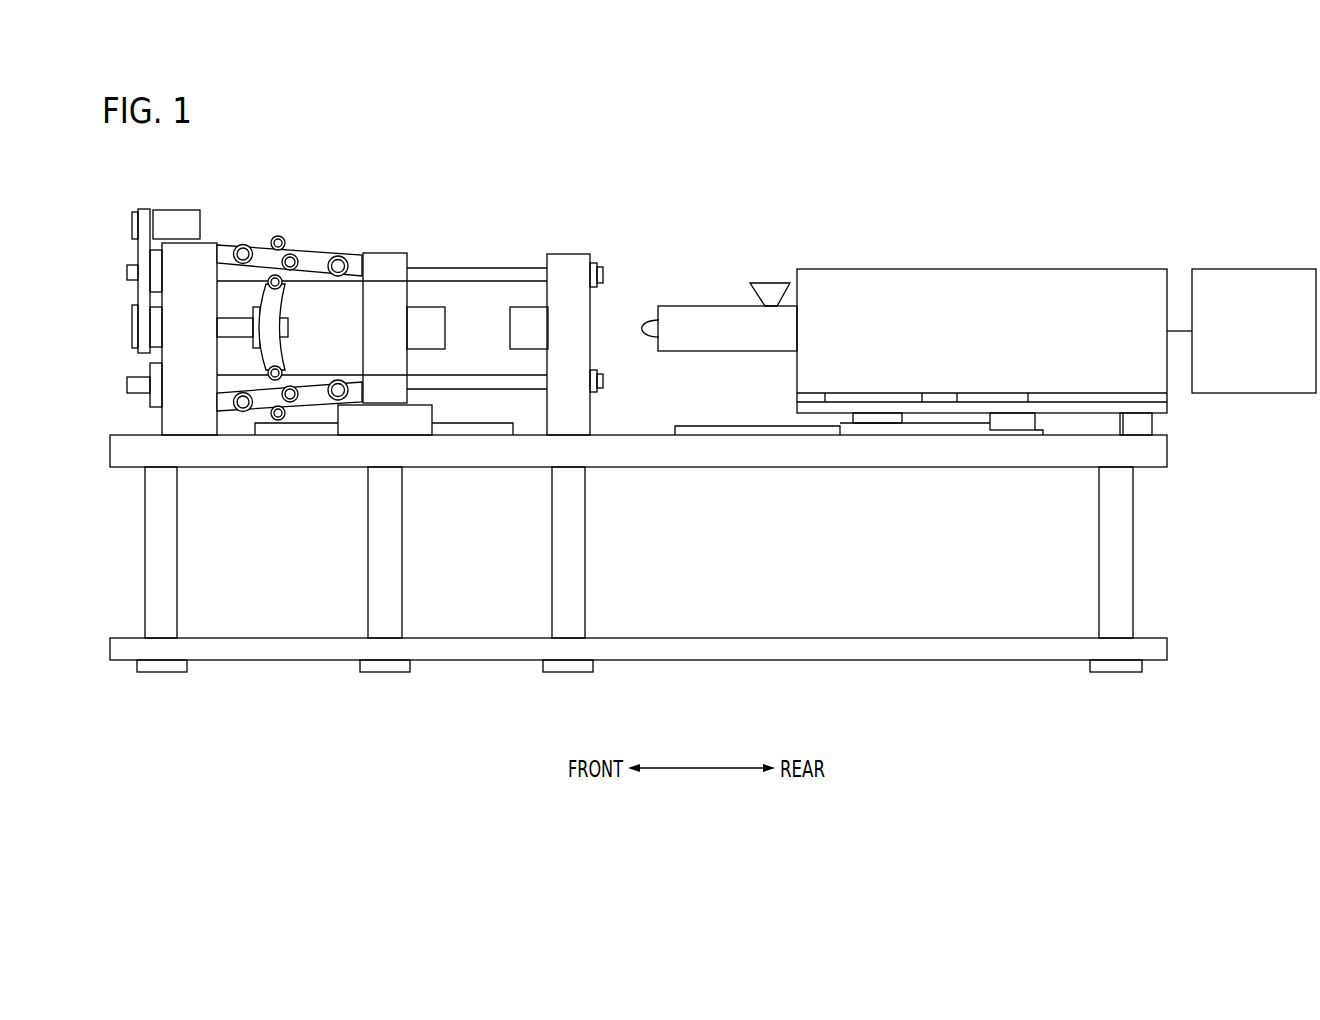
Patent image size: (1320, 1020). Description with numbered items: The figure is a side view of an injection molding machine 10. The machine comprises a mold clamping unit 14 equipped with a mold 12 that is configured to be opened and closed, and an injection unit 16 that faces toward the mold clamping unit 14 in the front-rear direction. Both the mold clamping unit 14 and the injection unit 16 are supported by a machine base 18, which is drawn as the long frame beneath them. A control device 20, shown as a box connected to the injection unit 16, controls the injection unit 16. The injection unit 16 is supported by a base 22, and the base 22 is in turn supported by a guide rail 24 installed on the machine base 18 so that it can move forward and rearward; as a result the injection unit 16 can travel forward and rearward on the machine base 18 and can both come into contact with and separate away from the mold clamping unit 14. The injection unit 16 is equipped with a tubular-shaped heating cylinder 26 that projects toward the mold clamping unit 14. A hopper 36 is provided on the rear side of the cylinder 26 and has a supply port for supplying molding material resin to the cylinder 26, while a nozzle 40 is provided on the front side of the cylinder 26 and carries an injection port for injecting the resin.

The injection molding machine 10 is at (347, 156).
The mold 12 is at (437, 323).
The mold clamping unit 14 is at (482, 292).
The injection unit 16 is at (1043, 268).
The machine base 18 is at (120, 416).
The control device 20 is at (1275, 268).
The base 22 is at (1158, 407).
The guide rail 24 is at (730, 426).
The heating cylinder 26 is at (693, 305).
The hopper 36 is at (764, 277).
The nozzle 40 is at (643, 330).